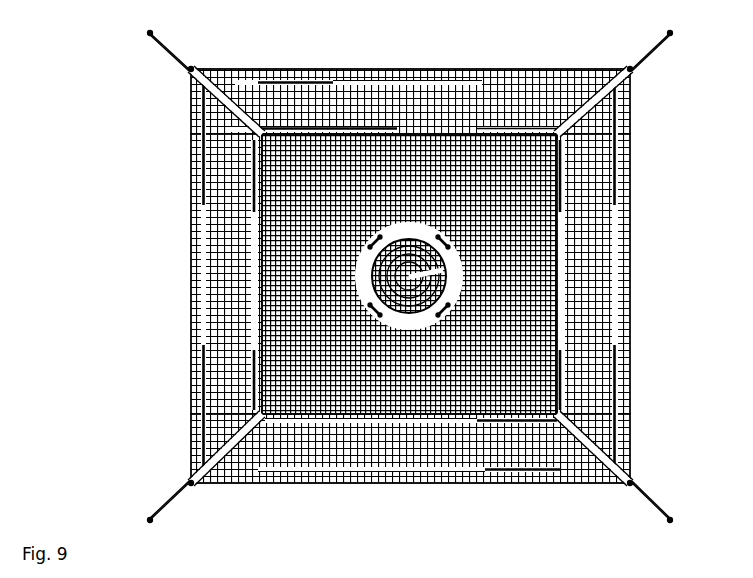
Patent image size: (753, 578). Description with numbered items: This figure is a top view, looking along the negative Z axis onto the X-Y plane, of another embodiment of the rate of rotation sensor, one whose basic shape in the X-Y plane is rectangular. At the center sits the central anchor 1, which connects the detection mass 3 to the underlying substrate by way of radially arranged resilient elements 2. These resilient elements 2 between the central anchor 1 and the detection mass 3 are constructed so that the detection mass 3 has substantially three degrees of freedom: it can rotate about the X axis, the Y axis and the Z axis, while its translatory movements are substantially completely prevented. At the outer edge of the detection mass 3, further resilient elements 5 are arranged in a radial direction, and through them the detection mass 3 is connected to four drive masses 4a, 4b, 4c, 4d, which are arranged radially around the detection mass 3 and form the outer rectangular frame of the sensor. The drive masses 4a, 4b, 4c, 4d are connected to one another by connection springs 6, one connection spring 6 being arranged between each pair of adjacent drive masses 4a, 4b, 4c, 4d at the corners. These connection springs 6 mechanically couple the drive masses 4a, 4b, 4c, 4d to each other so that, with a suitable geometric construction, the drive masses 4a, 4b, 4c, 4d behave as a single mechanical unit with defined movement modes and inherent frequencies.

The central anchor 1 is at (409, 268).
The resilient elements 2 is at (373, 251).
The detection mass 3 is at (262, 307).
The drive mass 4a is at (627, 308).
The drive mass 4b is at (427, 67).
The drive mass 4c is at (191, 260).
The drive mass 4d is at (385, 487).
The resilient elements 5 is at (310, 421).
The connection springs 6 is at (144, 31).